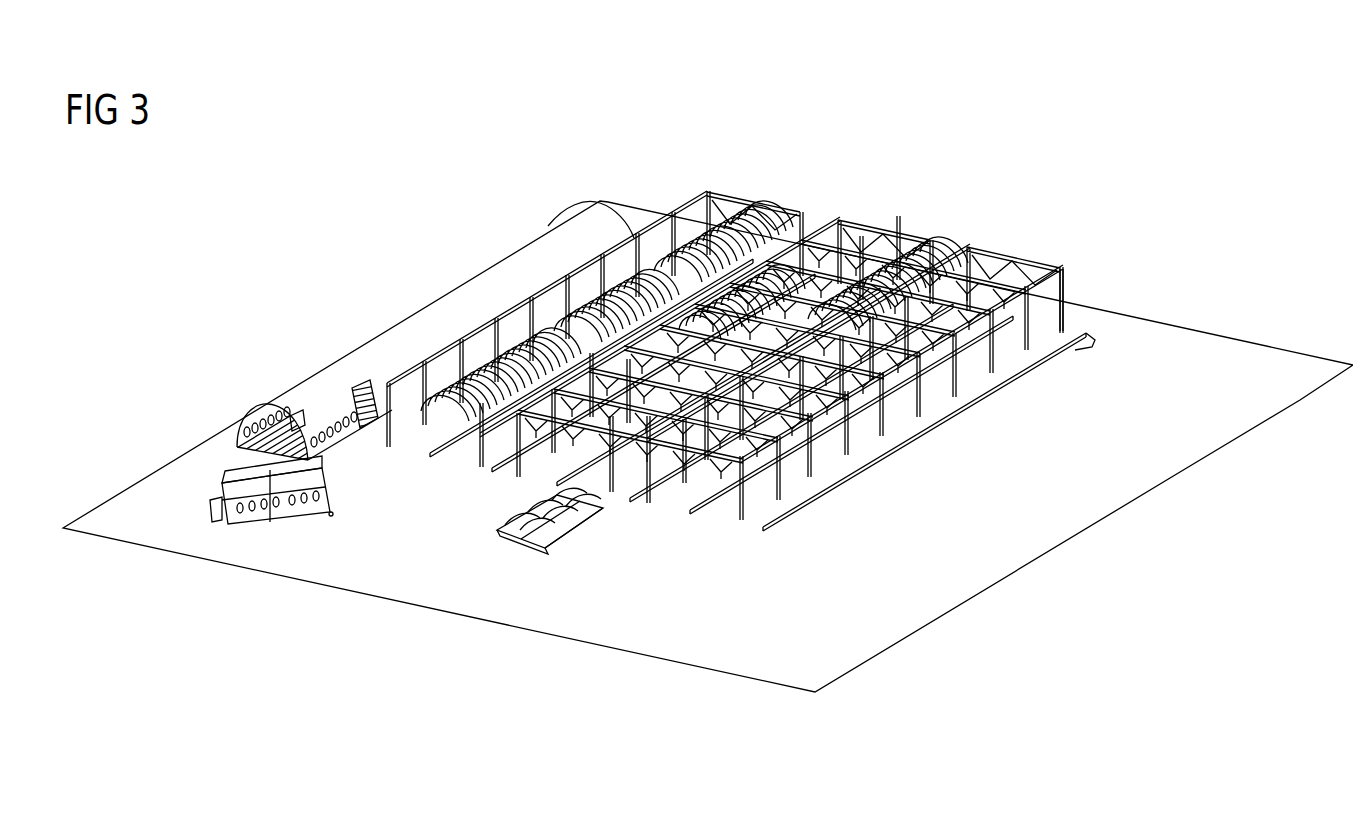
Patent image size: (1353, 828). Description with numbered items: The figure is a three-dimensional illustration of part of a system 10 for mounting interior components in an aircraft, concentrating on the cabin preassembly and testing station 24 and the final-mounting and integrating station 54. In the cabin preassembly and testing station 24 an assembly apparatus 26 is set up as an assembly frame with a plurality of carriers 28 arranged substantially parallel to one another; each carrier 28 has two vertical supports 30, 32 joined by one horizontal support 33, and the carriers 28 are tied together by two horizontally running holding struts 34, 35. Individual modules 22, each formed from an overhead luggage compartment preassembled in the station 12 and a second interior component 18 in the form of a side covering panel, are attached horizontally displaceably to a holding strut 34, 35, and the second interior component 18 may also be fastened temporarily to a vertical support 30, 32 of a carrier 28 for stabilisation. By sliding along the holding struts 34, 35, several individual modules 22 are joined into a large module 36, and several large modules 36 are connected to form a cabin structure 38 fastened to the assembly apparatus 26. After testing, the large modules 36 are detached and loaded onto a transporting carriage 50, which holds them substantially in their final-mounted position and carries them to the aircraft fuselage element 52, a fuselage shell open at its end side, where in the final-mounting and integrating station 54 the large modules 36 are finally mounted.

The system for mounting interior components 10 is at (994, 151).
The station for preassembling a first interior component 12 is at (523, 537).
The second interior component 18 is at (513, 527).
The individual module 22 is at (570, 552).
The cabin preassembly and testing station 24 is at (1142, 330).
The assembly apparatus 26 is at (762, 190).
The carrier 28 is at (756, 503).
The vertical support 30 is at (647, 497).
The vertical support 32 is at (738, 513).
The horizontal support 33 is at (697, 465).
The holding strut 34 is at (712, 332).
The holding strut 35 is at (770, 395).
The large module 36 is at (287, 503).
The cabin structure 38 is at (730, 217).
The transporting carriage 50 is at (213, 520).
The aircraft fuselage element 52 is at (390, 345).
The final-mounting and integrating station 54 is at (608, 202).